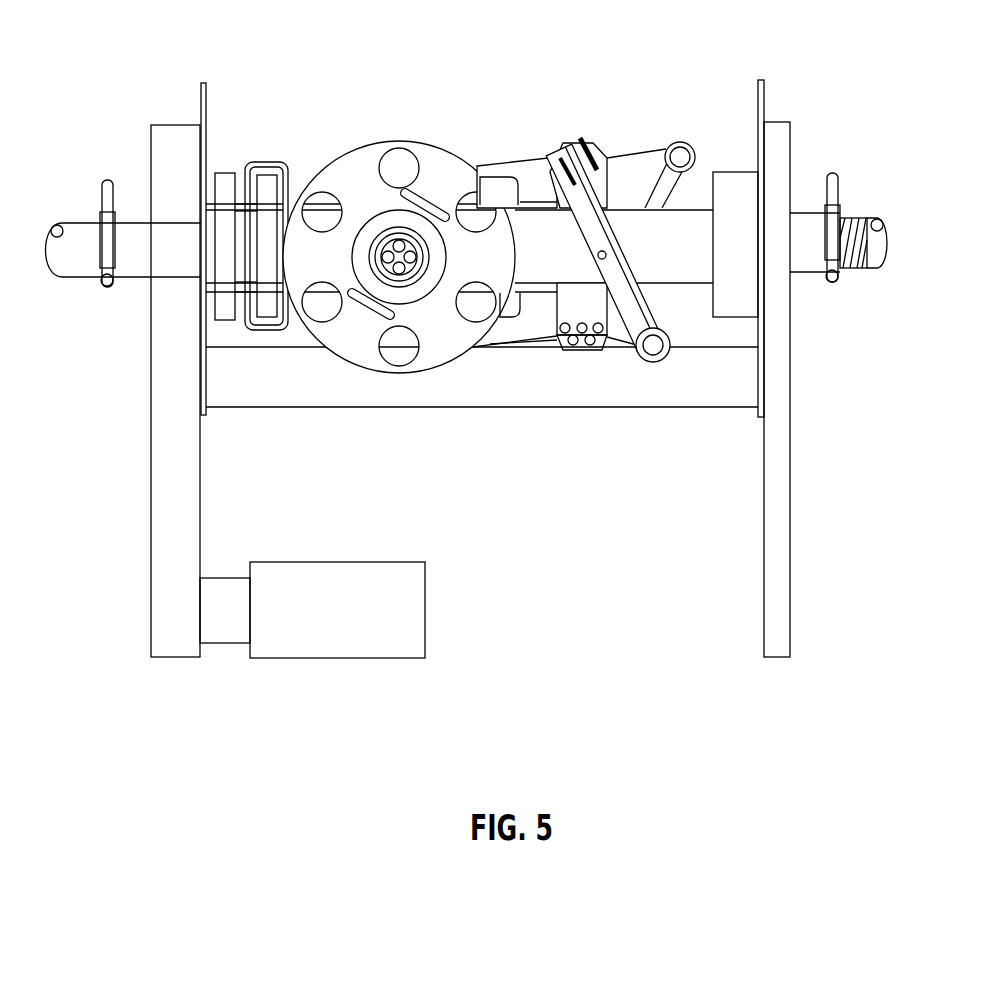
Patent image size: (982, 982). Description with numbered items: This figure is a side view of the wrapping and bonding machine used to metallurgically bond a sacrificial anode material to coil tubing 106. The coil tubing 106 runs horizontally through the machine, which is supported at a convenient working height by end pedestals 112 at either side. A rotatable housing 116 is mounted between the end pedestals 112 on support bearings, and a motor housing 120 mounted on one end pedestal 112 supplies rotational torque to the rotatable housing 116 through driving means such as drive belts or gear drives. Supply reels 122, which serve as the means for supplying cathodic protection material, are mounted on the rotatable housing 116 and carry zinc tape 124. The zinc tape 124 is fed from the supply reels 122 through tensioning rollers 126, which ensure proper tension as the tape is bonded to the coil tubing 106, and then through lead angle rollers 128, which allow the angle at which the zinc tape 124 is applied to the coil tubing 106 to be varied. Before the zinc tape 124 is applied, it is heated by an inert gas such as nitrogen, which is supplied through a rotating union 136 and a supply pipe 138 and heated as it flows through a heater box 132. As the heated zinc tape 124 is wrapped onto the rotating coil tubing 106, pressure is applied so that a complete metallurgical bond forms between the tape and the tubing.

The coil tubing 106 is at (72, 275).
The end pedestals 112 is at (150, 527).
The rotatable housing 116 is at (688, 284).
The motor housing 120 is at (310, 660).
The supply reels 122 is at (358, 145).
The zinc tape 124 is at (494, 165).
The tensioning rollers 126 is at (590, 350).
The lead angle rollers 128 is at (683, 142).
The heater box 132 is at (518, 178).
The rotating union 136 is at (223, 173).
The supply pipe 138 is at (273, 158).